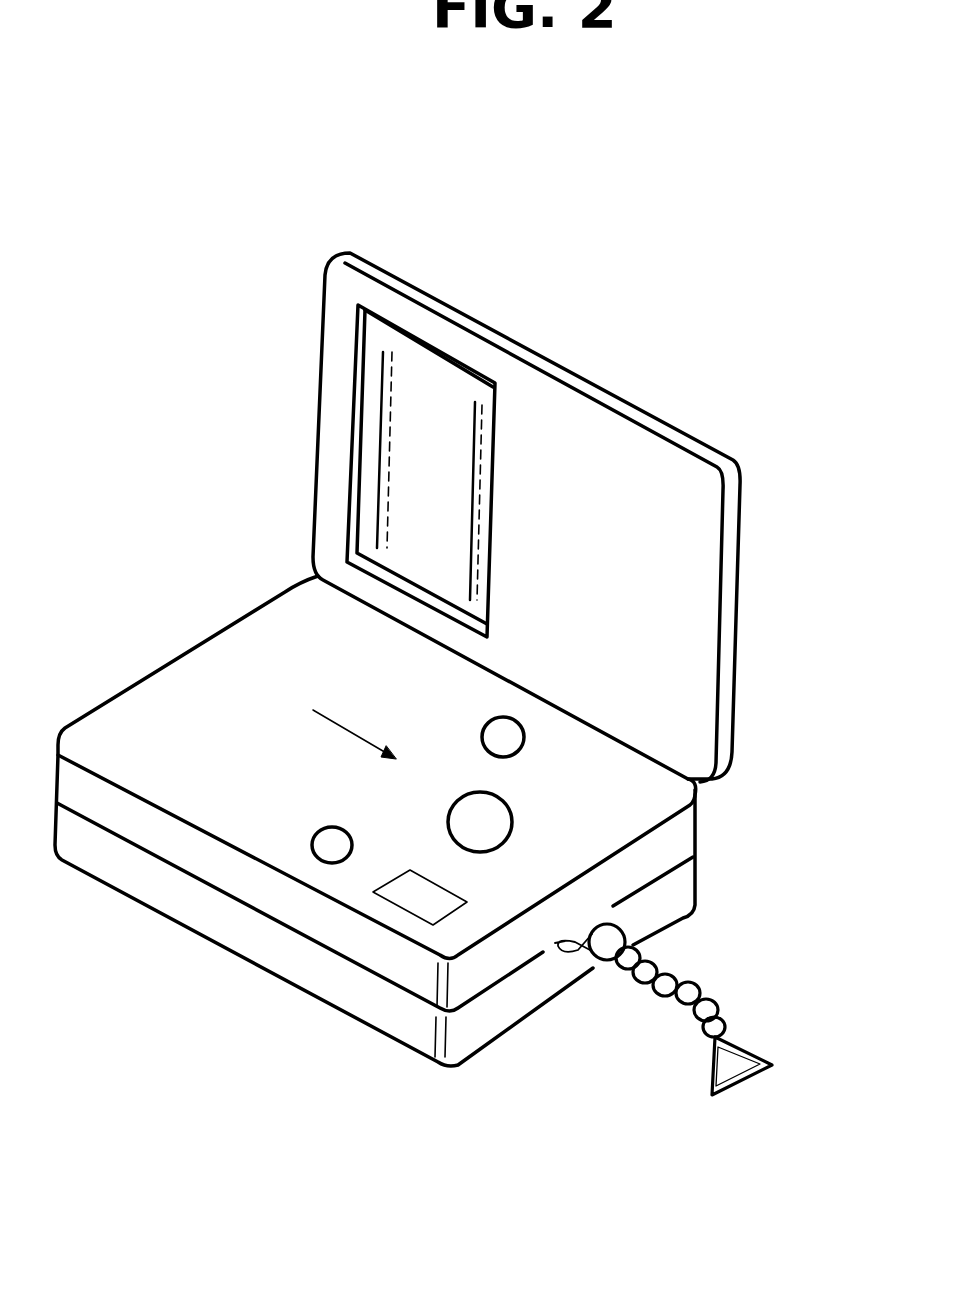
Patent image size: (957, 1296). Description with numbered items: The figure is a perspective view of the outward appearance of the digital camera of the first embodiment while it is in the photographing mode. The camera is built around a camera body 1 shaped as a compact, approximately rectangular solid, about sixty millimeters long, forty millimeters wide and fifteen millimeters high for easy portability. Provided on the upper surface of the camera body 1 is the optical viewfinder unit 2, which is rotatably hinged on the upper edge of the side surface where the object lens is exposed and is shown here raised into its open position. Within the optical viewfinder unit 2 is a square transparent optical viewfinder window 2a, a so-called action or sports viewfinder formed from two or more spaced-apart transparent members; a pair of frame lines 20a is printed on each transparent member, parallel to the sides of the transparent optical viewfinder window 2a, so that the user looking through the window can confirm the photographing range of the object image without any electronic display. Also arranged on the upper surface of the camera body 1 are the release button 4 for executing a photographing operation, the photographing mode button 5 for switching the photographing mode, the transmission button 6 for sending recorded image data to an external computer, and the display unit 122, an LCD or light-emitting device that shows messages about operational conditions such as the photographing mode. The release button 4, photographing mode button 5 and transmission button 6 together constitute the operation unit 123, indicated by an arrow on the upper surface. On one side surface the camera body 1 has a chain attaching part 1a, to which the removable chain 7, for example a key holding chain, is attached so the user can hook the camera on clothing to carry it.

The camera body 1 is at (507, 1028).
The chain attaching part 1a is at (557, 960).
The optical viewfinder unit 2 is at (712, 453).
The transparent optical viewfinder window 2a is at (372, 357).
The frame lines 20a is at (380, 447).
The release button 4 is at (493, 828).
The photographing mode button 5 is at (327, 852).
The transmission button 6 is at (507, 733).
The chain 7 is at (677, 957).
The display unit 122 is at (447, 890).
The operation unit 123 is at (324, 719).